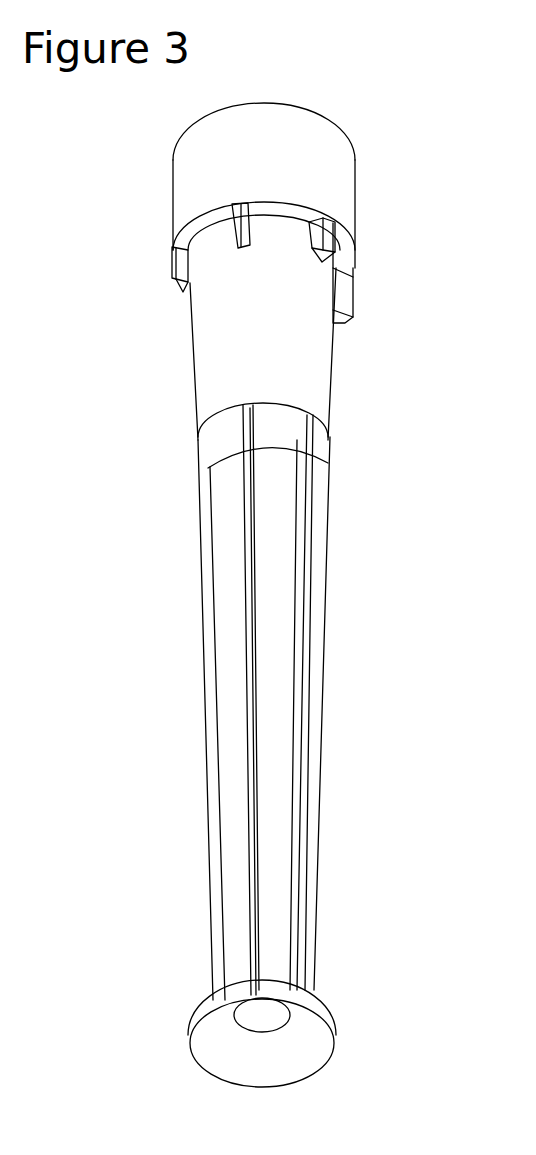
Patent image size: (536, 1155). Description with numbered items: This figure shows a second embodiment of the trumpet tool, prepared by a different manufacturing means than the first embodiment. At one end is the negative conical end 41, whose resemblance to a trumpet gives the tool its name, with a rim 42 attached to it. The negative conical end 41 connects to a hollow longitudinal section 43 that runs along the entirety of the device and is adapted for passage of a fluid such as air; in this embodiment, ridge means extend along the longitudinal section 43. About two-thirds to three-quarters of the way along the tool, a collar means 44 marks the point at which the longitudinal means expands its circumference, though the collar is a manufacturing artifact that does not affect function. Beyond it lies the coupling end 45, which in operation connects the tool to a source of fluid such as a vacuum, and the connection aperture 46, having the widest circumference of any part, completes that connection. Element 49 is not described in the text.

The negative conical end 41 is at (300, 1052).
The rim 42 is at (323, 1013).
The hollow longitudinal section 43 is at (233, 744).
The collar means 44 is at (325, 380).
The coupling end 45 is at (333, 203).
The connection aperture 46 is at (290, 107).
The strut 49 is at (305, 602).